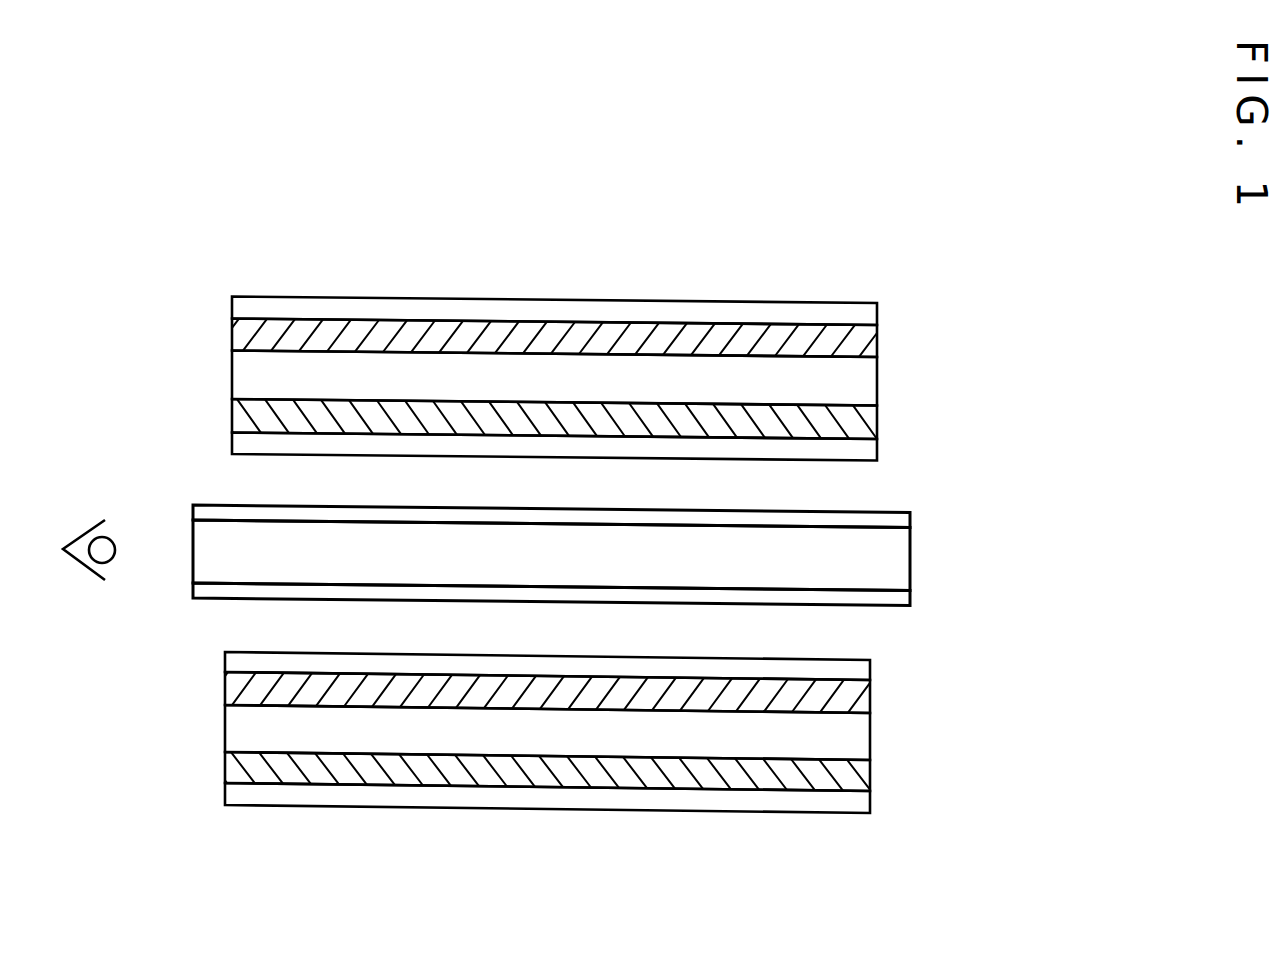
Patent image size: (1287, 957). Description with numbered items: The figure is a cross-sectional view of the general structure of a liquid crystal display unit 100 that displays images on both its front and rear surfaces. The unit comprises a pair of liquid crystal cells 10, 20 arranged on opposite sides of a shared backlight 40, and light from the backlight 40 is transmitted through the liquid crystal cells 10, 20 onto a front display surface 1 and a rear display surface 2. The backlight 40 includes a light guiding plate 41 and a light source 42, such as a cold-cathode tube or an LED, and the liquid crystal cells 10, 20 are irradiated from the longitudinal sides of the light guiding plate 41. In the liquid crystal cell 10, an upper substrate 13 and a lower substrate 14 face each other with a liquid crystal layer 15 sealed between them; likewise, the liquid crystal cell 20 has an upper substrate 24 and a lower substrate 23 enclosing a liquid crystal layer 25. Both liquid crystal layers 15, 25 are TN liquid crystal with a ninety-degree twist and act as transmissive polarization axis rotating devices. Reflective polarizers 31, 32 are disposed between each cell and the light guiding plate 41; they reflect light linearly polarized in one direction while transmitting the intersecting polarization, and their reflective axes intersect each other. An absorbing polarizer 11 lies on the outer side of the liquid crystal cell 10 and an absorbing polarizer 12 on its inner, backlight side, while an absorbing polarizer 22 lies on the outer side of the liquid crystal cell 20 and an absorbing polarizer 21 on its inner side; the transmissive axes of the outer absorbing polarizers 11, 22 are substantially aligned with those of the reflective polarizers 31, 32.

The liquid crystal display unit 100 is at (892, 140).
The display surface 1 is at (380, 297).
The liquid crystal cell 10 is at (973, 302).
The absorbing polarizer 11 is at (867, 313).
The absorbing polarizer 12 is at (864, 451).
The upper substrate 13 is at (868, 345).
The lower substrate 14 is at (866, 419).
The liquid crystal layer 15 is at (866, 381).
The backlight 40 is at (1030, 554).
The reflective polarizer 31 is at (900, 520).
The reflective polarizer 32 is at (900, 599).
The light guiding plate 41 is at (898, 559).
The light source 42 is at (85, 567).
The display surface 2 is at (365, 805).
The liquid crystal cell 20 is at (966, 647).
The absorbing polarizer 21 is at (860, 669).
The absorbing polarizer 22 is at (858, 804).
The lower substrate 23 is at (866, 699).
The upper substrate 24 is at (858, 772).
The liquid crystal layer 25 is at (860, 736).